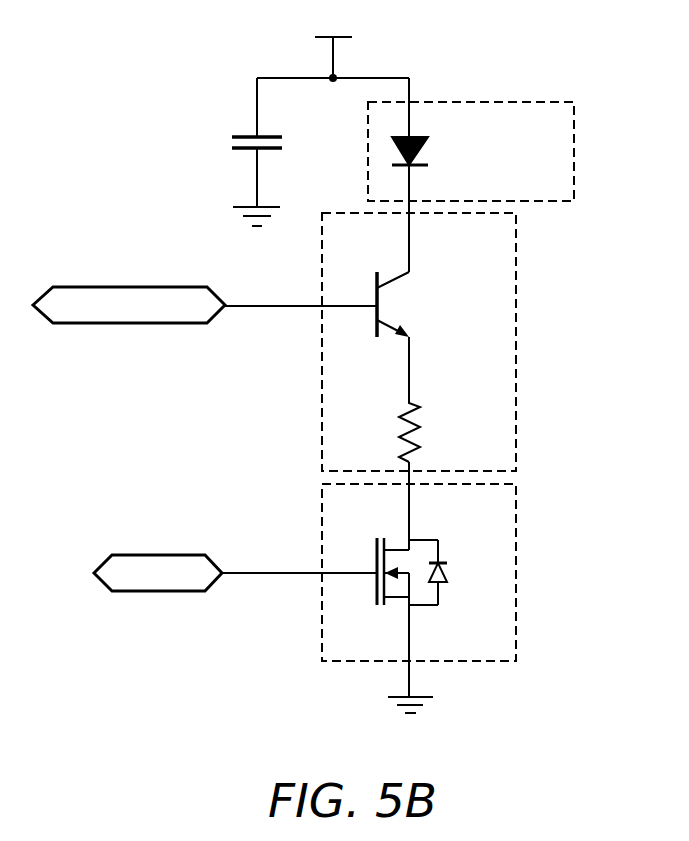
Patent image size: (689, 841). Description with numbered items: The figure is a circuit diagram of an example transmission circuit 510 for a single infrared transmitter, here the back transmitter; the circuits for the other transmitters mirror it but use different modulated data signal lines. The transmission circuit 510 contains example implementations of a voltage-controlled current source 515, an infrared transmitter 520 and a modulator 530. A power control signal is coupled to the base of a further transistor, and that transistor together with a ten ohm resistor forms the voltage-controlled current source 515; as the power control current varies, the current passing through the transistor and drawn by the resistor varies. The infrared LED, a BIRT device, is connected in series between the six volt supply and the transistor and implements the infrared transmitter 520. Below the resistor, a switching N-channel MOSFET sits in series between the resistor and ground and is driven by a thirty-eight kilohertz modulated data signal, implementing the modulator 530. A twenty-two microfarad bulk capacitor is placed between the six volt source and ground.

The transmission circuit 510 is at (160, 69).
The voltage-controlled current source 515 is at (516, 230).
The infrared transmitter 520 is at (574, 113).
The modulator 530 is at (516, 506).